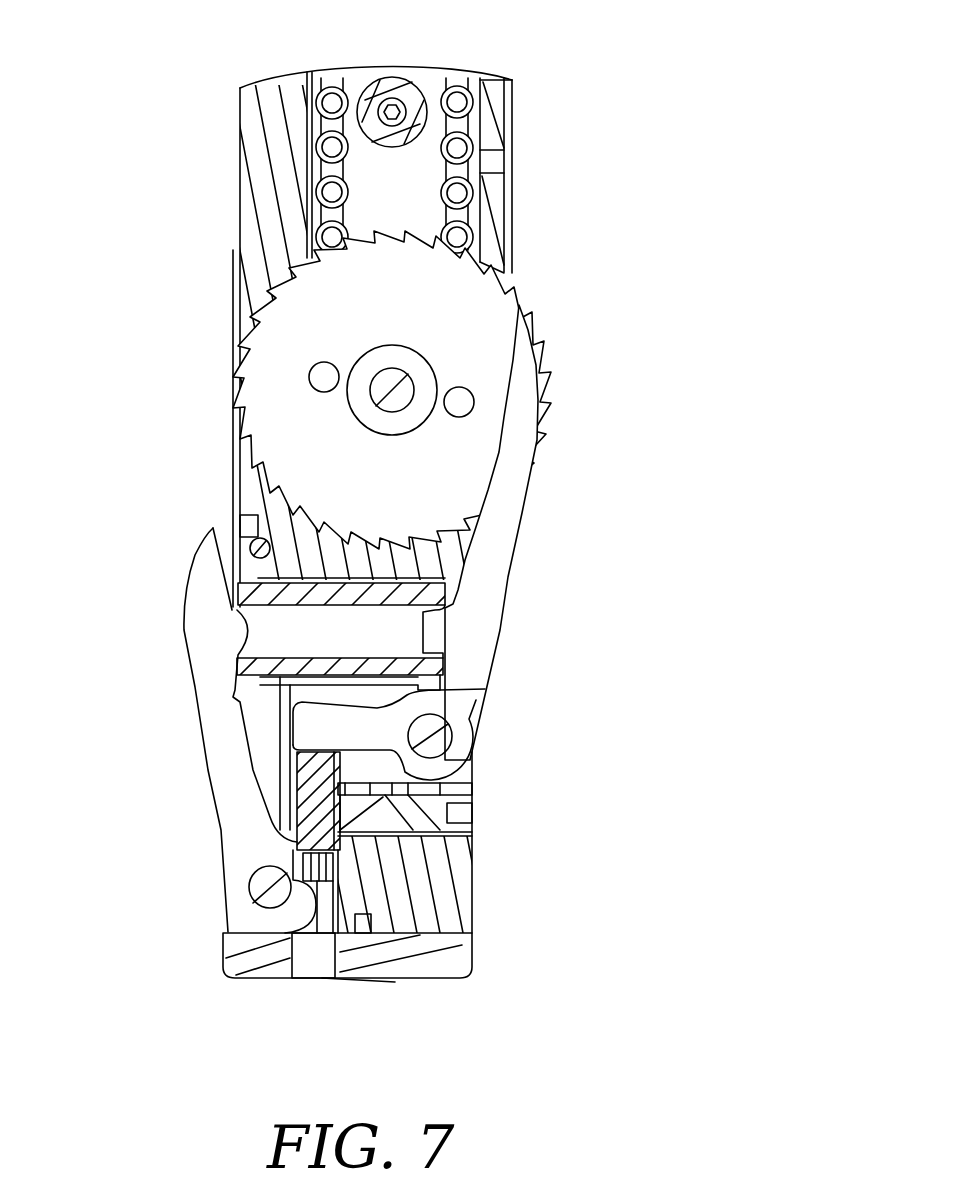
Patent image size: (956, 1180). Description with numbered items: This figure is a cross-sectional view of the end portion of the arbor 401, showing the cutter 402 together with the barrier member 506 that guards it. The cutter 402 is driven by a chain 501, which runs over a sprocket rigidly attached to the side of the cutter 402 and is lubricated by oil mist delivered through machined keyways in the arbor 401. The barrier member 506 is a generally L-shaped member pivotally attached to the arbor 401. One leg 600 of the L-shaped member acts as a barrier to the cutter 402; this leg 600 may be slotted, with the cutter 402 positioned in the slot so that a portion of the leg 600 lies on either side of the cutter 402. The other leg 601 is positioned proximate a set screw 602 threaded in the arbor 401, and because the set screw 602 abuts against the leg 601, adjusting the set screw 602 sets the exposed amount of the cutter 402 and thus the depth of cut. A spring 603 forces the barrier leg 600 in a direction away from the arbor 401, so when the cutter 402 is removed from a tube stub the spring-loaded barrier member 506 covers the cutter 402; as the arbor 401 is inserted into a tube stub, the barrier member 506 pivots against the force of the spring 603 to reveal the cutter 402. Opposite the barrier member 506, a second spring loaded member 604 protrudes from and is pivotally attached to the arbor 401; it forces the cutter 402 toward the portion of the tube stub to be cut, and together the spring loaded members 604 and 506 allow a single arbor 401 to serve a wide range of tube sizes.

The arbor 401 is at (512, 157).
The cutter 402 is at (473, 298).
The chain 501 is at (458, 120).
The barrier member 506 is at (514, 567).
The leg 600 is at (498, 530).
The leg 601 is at (468, 723).
The set screw 602 is at (318, 808).
The spring 603 is at (428, 663).
The second spring loaded member 604 is at (207, 750).